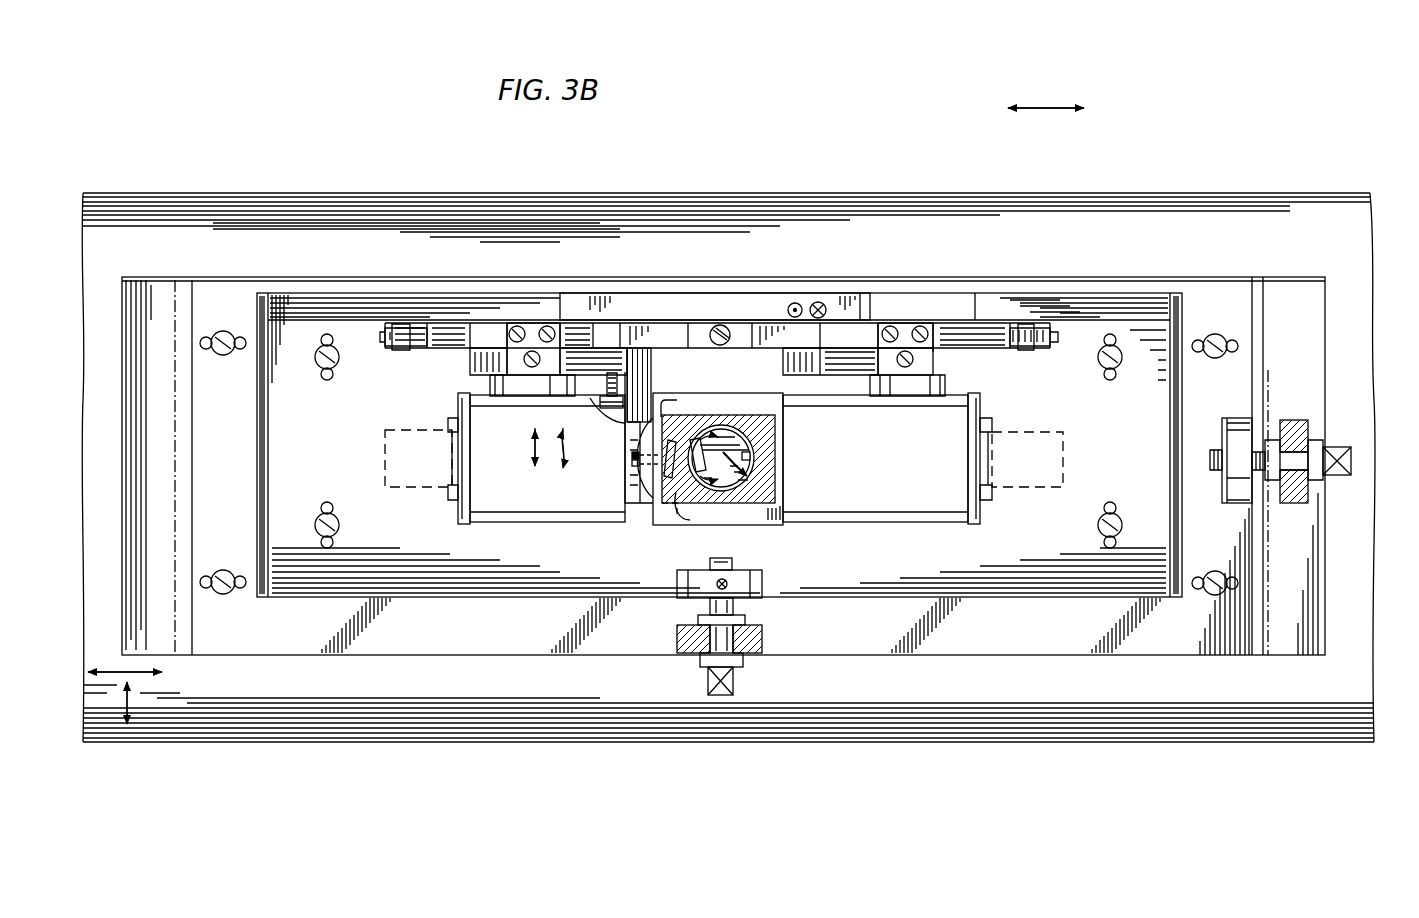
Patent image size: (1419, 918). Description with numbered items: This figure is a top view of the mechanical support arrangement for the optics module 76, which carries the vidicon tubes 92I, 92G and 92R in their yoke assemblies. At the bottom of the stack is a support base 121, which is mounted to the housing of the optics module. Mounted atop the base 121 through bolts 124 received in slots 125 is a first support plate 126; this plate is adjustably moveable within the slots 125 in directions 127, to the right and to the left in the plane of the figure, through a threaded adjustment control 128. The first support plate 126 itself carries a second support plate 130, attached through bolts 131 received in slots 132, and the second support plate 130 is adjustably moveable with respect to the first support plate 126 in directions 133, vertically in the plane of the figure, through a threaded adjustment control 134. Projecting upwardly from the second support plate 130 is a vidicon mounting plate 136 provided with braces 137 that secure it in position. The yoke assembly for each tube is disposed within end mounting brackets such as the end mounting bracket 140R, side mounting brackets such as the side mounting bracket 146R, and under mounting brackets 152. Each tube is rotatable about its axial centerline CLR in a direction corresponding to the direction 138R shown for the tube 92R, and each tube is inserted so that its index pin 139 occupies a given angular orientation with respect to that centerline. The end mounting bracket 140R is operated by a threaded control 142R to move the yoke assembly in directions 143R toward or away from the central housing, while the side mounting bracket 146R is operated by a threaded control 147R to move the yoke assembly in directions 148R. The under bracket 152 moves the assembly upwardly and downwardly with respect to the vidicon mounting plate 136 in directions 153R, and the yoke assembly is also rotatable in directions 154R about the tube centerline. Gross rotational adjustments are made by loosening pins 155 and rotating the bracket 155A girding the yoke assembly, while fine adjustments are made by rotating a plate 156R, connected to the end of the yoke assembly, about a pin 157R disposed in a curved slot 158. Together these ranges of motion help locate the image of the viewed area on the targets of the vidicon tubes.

The optics module 76 is at (1340, 168).
The vidicon tube 92I is at (385, 450).
The vidicon tube 92G is at (1068, 447).
The vidicon tube 92R is at (782, 480).
The support base 121 is at (430, 700).
The bolts 124 is at (228, 332).
The slots 125 is at (206, 337).
The first support plate 126 is at (596, 625).
The directions 127 is at (118, 665).
The threaded adjustment control 128 is at (1297, 420).
The second support plate 130 is at (496, 590).
The bolts 131 is at (331, 345).
The slots 132 is at (327, 334).
The directions 133 is at (132, 710).
The threaded adjustment control 134 is at (727, 700).
The vidicon mounting plate 136 is at (448, 278).
The braces 137 is at (264, 460).
The direction 138R is at (700, 474).
The index pin 139 is at (768, 455).
The end mounting bracket 140R is at (652, 333).
The threaded control 142R is at (723, 326).
The directions 143R is at (820, 304).
The side mounting bracket 146R is at (496, 366).
The threaded control 147R is at (1032, 335).
The directions 148R is at (1055, 106).
The under mounting bracket 152 is at (602, 395).
The directions 153R is at (530, 448).
The directions 154R is at (562, 448).
The pins 155 is at (634, 463).
The bracket 155A is at (660, 403).
The plate 156R is at (757, 495).
The pin 157R is at (696, 450).
The curved slot 158 is at (680, 430).
The axial centerline CLR is at (780, 492).